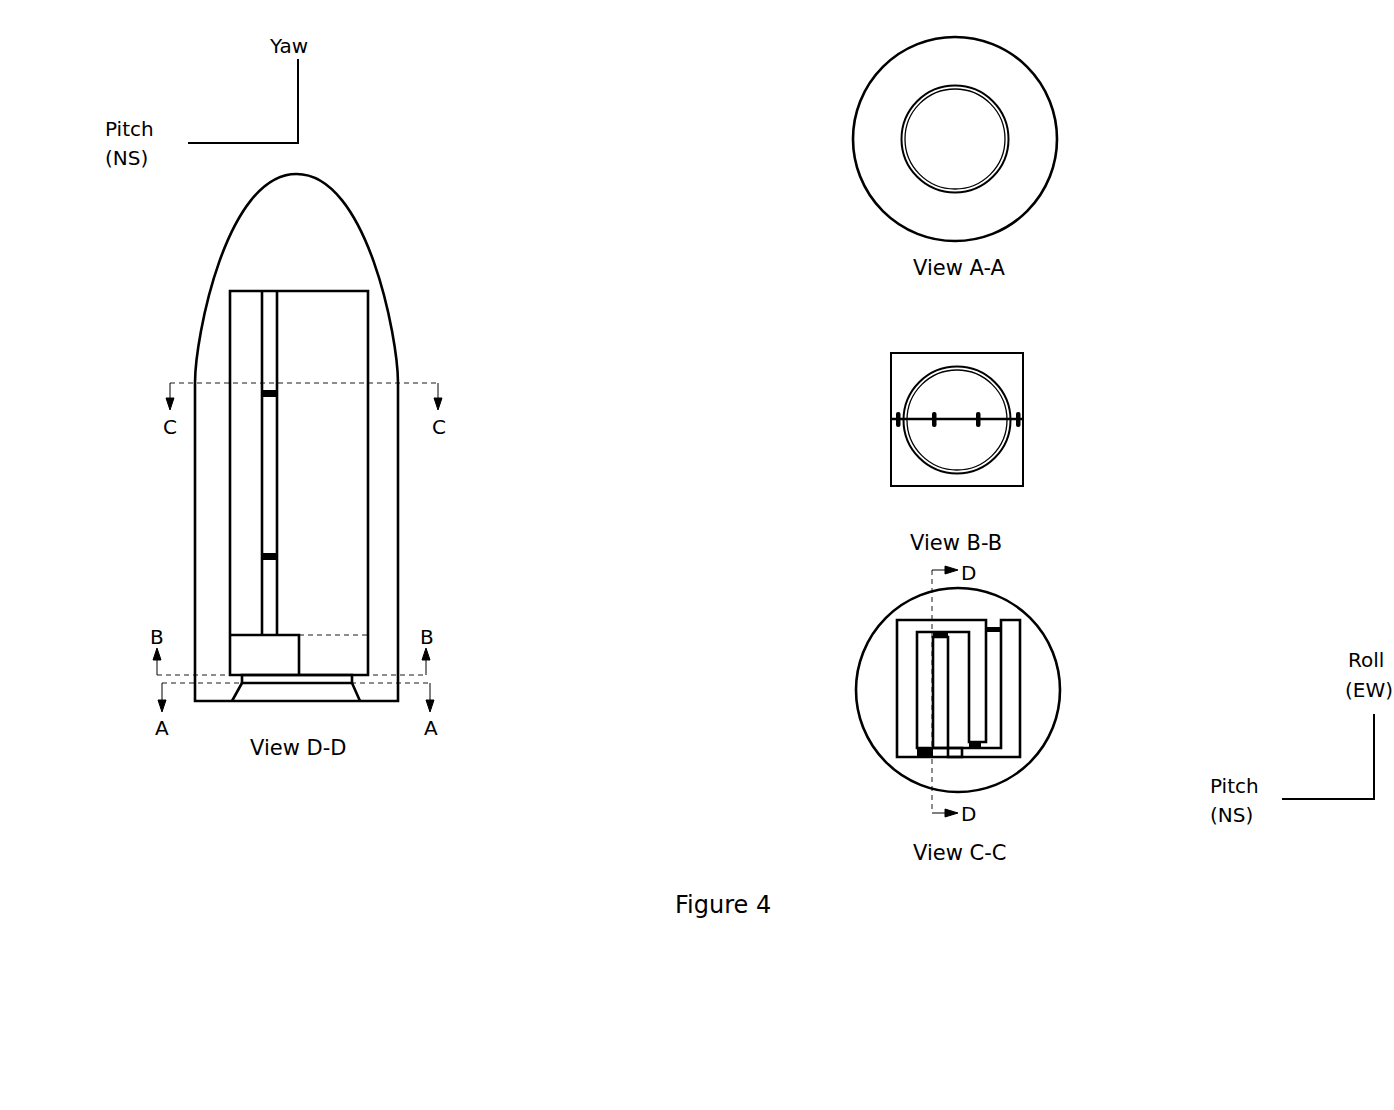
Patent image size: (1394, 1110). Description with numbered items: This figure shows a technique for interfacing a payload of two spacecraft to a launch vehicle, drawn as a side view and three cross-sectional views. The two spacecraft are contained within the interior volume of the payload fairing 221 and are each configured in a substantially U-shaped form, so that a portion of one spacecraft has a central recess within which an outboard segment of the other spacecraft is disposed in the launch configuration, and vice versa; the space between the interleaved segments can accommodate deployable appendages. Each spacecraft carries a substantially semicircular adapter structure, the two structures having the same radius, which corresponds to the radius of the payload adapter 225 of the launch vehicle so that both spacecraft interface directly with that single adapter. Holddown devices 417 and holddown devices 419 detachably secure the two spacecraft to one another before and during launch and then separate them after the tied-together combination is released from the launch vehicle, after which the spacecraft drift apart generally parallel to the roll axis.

The payload fairing 221 is at (370, 256).
The payload adapter 225 is at (357, 690).
The holddown device 417 is at (895, 417).
The holddown device 419 is at (938, 630).